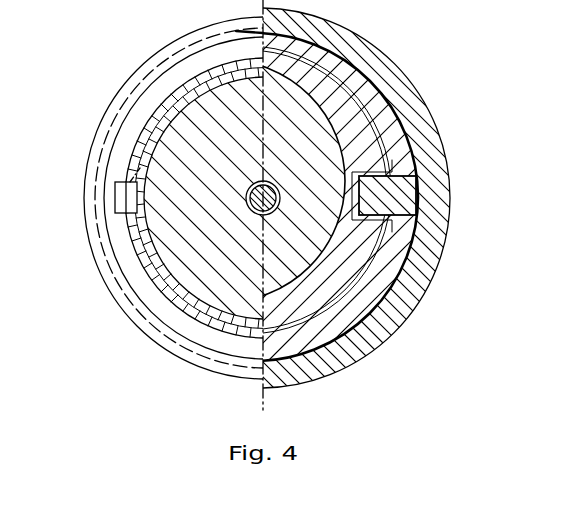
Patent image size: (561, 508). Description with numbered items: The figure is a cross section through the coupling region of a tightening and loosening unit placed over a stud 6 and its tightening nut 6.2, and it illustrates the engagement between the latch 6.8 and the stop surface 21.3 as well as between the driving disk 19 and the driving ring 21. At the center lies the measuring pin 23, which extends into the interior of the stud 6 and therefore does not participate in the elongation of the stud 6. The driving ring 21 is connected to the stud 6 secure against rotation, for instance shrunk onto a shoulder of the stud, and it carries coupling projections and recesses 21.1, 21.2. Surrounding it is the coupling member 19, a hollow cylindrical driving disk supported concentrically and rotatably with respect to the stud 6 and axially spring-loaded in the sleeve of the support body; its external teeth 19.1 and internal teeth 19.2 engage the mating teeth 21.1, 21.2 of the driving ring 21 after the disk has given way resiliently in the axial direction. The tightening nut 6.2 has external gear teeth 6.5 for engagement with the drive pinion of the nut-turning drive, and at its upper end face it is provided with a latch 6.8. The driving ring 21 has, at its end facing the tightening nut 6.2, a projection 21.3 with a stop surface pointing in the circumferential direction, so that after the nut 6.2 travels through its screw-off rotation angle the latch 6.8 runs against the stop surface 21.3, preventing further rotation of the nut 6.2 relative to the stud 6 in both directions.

The stud 6 is at (280, 200).
The tightening nut 6.2 is at (165, 315).
The external gear teeth 6.5 is at (124, 298).
The latch 6.8 is at (117, 204).
The coupling member (driving disk) 19 is at (280, 200).
The external teeth 19.1 is at (414, 178).
The internal teeth 19.2 is at (368, 199).
The driving ring 21 is at (280, 197).
The coupling projections 21.1 is at (383, 213).
The coupling recesses 21.2 is at (350, 178).
The projection with stop surface 21.3 is at (132, 166).
The measuring pin 23 is at (246, 199).